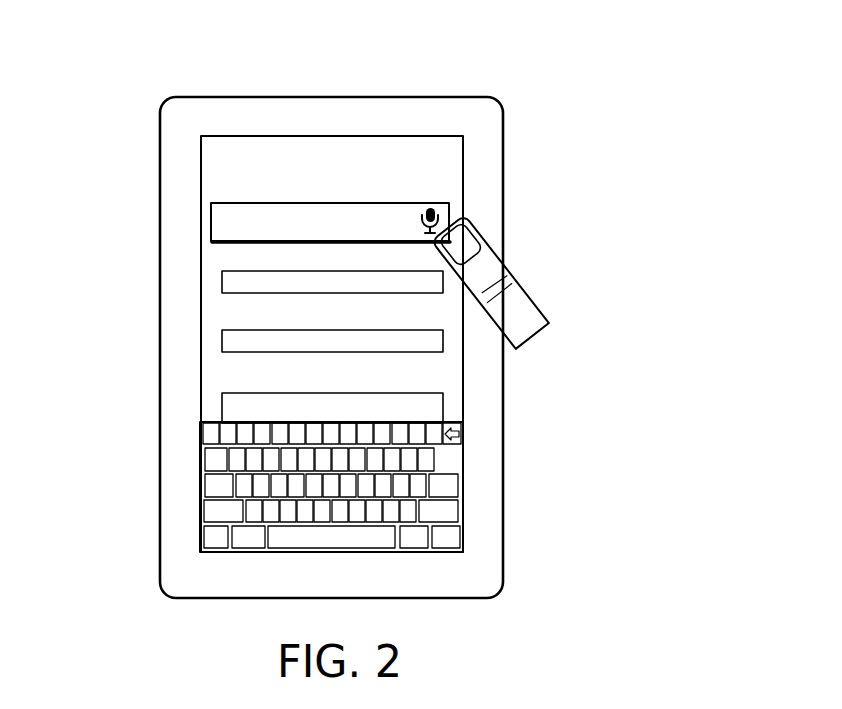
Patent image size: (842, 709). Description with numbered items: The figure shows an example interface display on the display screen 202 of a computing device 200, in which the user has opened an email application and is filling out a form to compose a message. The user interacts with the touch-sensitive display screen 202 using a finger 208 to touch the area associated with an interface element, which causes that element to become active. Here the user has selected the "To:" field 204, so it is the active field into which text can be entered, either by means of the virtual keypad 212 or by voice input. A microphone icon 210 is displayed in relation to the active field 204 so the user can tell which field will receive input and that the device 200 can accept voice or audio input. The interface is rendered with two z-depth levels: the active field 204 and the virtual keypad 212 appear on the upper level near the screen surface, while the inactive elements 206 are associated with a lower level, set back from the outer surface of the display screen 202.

The computing device 200 is at (652, 150).
The display screen 202 is at (295, 140).
The "To:" field 204 is at (208, 222).
The inactive elements 206 is at (222, 337).
The finger 208 is at (533, 295).
The microphone icon 210 is at (445, 201).
The virtual keypad 212 is at (200, 488).